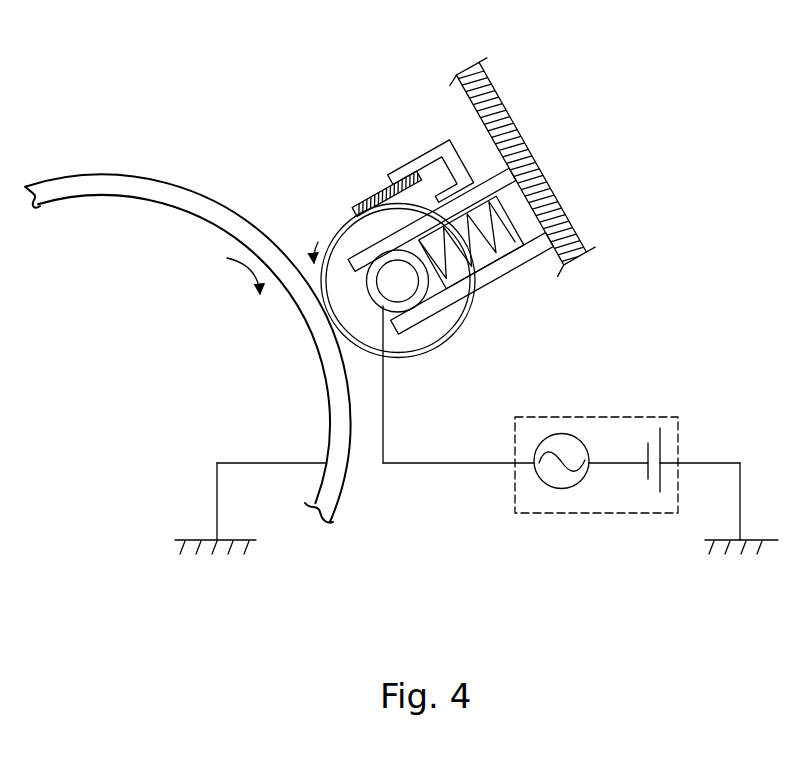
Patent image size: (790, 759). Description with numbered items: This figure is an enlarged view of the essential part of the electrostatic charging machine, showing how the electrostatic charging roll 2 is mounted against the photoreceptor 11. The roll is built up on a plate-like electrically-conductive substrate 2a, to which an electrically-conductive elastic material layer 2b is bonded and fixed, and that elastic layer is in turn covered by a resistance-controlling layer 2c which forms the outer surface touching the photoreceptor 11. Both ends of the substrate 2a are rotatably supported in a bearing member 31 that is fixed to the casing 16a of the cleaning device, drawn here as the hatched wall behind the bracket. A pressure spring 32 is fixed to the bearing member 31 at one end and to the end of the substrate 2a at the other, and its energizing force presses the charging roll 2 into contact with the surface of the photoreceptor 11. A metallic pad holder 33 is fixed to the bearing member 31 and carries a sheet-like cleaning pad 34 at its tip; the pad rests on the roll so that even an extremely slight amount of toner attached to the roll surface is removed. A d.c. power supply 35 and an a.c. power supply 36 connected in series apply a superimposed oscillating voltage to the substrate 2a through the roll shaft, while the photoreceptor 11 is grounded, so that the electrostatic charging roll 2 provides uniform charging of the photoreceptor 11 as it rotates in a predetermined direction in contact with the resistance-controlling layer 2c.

The electrostatic charging roll 2 is at (379, 334).
The electrically-conductive substrate 2a is at (378, 290).
The electrically-conductive elastic material layer 2b is at (372, 328).
The resistance-controlling layer 2c is at (461, 324).
The photoreceptor 11 is at (207, 220).
The casing 16a is at (523, 166).
The bearing member 31 is at (450, 252).
The pressure spring 32 is at (467, 241).
The metallic pad holder 33 is at (431, 179).
The cleaning pad 34 is at (387, 193).
The d.c. power supply 35 is at (653, 483).
The a.c. power supply 36 is at (560, 489).